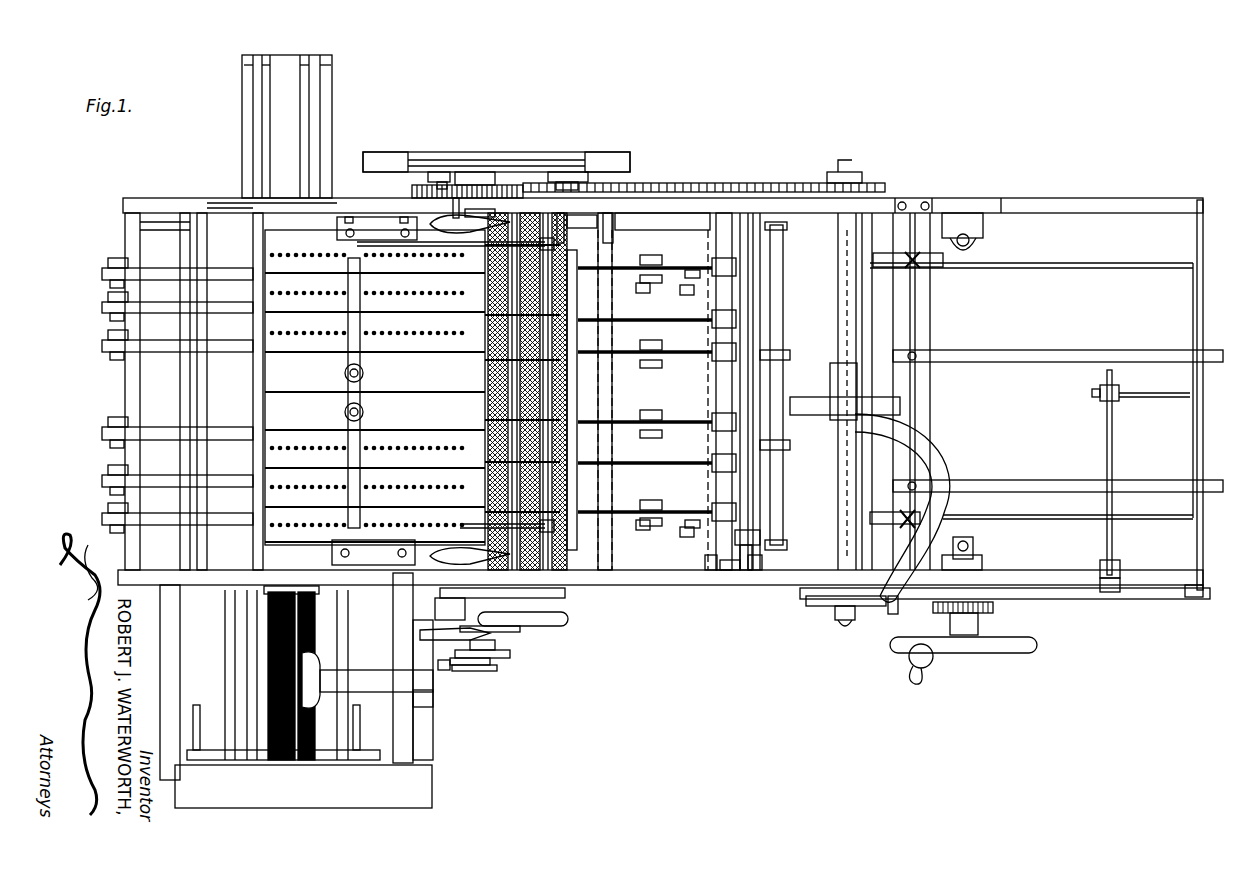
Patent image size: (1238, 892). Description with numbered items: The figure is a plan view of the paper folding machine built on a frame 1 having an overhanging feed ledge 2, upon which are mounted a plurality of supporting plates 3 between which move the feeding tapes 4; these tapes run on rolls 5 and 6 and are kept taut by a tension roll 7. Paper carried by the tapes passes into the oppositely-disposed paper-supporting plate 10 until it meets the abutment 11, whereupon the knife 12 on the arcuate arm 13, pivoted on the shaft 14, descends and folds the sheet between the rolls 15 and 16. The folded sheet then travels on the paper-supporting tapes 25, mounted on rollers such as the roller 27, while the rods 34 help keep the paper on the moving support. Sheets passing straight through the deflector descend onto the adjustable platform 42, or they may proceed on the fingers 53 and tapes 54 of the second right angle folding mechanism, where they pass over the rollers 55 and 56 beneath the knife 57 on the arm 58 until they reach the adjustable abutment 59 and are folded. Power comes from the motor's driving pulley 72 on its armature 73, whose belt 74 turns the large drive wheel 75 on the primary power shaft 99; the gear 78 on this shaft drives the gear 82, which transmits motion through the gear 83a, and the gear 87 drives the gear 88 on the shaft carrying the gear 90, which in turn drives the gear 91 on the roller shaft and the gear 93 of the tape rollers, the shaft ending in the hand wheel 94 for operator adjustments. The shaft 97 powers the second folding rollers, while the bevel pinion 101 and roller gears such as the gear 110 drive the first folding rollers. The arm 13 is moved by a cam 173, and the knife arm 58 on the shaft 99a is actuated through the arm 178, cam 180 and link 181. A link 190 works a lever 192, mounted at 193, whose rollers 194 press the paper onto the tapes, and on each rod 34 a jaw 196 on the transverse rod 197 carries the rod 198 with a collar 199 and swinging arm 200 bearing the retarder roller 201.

The frame 1 is at (175, 212).
The feed ledge 2 is at (118, 216).
The supporting plates 3 is at (670, 215).
The feeding tapes 4 is at (628, 280).
The roll 5 is at (785, 298).
The roll 6 is at (570, 300).
The tension roll 7 is at (645, 195).
The paper-supporting plate 10 is at (318, 240).
The abutment 11 is at (364, 388).
The knife 12 is at (488, 373).
The arcuate arm 13 is at (466, 216).
The shaft 14 is at (430, 224).
The roll 15 is at (555, 398).
The roll 16 is at (520, 408).
The paper-supporting tapes 25 is at (100, 308).
The roller 27 is at (100, 430).
The rods 34 is at (582, 270).
The adjustable platform 42 is at (242, 128).
The paper-supporting fingers 53 is at (180, 630).
The tapes 54 is at (232, 686).
The roller 55 is at (268, 640).
The roller 56 is at (320, 638).
The knife 57 is at (318, 620).
The arm 58 is at (358, 675).
The adjustable abutment 59 is at (213, 758).
The driving pulley 72 is at (622, 156).
The armature 73 is at (578, 175).
The belt 74 is at (540, 215).
The drive wheel 75 is at (470, 185).
The gear 78 is at (412, 185).
The gear 82 is at (458, 200).
The gear 83a is at (510, 215).
The gear 87 is at (490, 633).
The gear 88 is at (565, 593).
The gear 90 is at (573, 160).
The gear 91 is at (520, 163).
The gear 93 is at (582, 220).
The hand wheel 94 is at (568, 622).
The shaft 97 is at (413, 727).
The primary power shaft 99 is at (422, 185).
The shaft 99a is at (433, 700).
The bevel pinion 101 is at (548, 383).
The gear 110 is at (795, 397).
The cam 173 is at (520, 630).
The arm 178 is at (445, 672).
The cam 180 is at (505, 658).
The link 181 is at (465, 668).
The link 190 is at (708, 575).
The lever 192 is at (730, 585).
The lever mounting 193 is at (752, 585).
The rollers 194 is at (790, 355).
The jaw 196 is at (705, 272).
The transverse supporting rod 197 is at (735, 538).
The rod 198 is at (628, 270).
The collar 199 is at (655, 275).
The swinging arm 200 is at (650, 283).
The retarder roller 201 is at (687, 286).